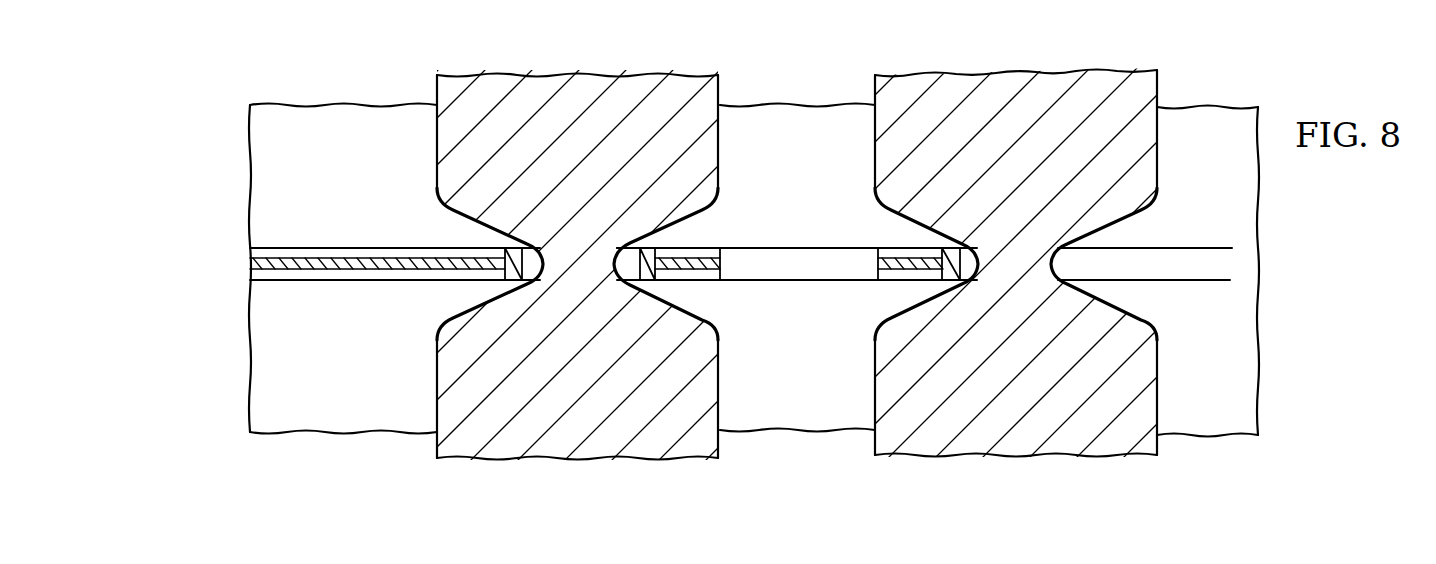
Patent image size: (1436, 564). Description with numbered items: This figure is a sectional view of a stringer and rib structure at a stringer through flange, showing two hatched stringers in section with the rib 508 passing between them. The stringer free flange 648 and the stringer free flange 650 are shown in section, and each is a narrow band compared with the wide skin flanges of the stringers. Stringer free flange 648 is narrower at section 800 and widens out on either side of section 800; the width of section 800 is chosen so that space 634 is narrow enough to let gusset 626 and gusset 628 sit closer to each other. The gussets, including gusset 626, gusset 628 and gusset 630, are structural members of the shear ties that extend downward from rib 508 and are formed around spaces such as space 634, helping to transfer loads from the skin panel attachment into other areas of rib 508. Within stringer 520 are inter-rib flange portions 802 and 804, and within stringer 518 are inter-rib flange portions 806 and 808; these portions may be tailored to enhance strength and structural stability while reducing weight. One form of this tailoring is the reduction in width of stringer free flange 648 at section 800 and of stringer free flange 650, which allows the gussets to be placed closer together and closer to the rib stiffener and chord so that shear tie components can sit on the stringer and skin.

The rib 508 is at (395, 275).
The stringer 518 is at (973, 234).
The stringer 520 is at (571, 240).
The gusset 626 is at (504, 247).
The gusset 628 is at (782, 254).
The gusset 630 is at (950, 247).
The space 634 is at (610, 280).
The stringer free flange 648 is at (528, 283).
The stringer free flange 650 is at (1054, 262).
The section 800 is at (626, 280).
The inter-rib flange portion 802 is at (719, 143).
The inter-rib flange portion 804 is at (719, 372).
The inter-rib flange portion 806 is at (1158, 167).
The inter-rib flange portion 808 is at (1158, 356).